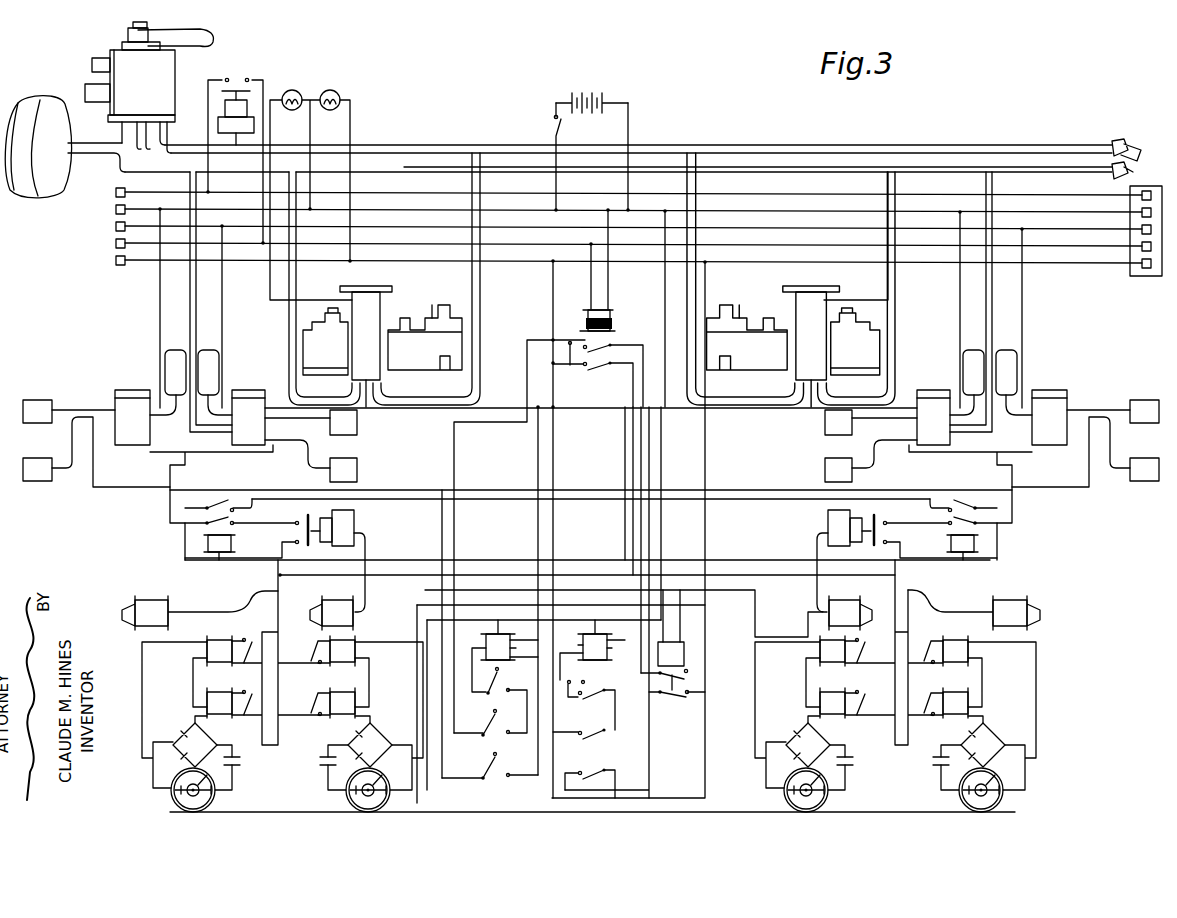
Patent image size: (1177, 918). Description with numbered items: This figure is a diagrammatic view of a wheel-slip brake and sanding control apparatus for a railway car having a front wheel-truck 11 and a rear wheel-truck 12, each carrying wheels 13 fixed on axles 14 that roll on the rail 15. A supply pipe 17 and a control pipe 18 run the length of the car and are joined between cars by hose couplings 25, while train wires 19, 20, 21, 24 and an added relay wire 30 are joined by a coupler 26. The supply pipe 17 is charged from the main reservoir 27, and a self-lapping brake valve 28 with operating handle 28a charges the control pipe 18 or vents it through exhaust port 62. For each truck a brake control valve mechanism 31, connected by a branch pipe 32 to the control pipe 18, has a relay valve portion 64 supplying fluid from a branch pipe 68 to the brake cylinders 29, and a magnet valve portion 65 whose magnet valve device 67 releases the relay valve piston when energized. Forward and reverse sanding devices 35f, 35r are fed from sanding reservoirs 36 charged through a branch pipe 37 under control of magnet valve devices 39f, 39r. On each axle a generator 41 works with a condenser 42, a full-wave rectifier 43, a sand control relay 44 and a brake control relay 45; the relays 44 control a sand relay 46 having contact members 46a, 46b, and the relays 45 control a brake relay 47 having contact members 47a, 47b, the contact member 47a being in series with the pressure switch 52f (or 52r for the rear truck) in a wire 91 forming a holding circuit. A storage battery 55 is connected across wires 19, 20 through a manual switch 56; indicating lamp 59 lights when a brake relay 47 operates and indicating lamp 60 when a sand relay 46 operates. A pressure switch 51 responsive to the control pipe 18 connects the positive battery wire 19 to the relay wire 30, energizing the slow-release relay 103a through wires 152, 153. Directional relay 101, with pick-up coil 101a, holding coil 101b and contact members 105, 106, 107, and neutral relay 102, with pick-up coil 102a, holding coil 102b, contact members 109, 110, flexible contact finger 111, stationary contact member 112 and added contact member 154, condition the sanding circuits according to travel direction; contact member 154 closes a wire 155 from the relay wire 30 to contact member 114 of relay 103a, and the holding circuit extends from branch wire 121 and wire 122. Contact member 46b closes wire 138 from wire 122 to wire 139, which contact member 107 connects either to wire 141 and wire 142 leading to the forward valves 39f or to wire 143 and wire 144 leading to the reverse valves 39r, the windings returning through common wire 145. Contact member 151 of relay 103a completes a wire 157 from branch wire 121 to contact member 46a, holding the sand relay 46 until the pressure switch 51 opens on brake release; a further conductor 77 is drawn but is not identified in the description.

The front wheel-truck 11 is at (280, 783).
The rear wheel-truck 12 is at (898, 787).
The wheel 13 is at (217, 797).
The axle 14 is at (185, 782).
The rail 15 is at (676, 811).
The supply pipe 17 is at (437, 171).
The control pipe 18 is at (449, 146).
The positive battery wire 19 is at (427, 193).
The negative battery wire 20 is at (419, 210).
The indicating wire 21 is at (409, 227).
The common sanding wire 24 is at (389, 261).
The hose couplings 25 is at (1129, 150).
The coupler 26 is at (1144, 277).
The main reservoir 27 is at (40, 100).
The brake valve 28 is at (178, 62).
The operating handle 28a is at (216, 40).
The brake cylinders 29 is at (158, 597).
The relay wire 30 is at (399, 244).
The brake control valve mechanism 31 is at (356, 288).
The branch pipe 32 is at (472, 276).
The forward sanding devices 35f is at (52, 424).
The reverse sanding devices 35r is at (346, 436).
The sanding reservoirs 36 is at (174, 350).
The branch pipe 37 is at (190, 292).
The forward sanding magnet valve device 39f is at (148, 382).
The reverse sanding magnet valve device 39r is at (262, 382).
The generator 41 is at (170, 797).
The electrical condenser 42 is at (318, 758).
The full-wave rectifier 43 is at (190, 729).
The sand control relay 44 is at (205, 650).
The brake control relay 45 is at (205, 702).
The sand relay 46 is at (688, 650).
The contact member 46a is at (690, 680).
The contact member 46b is at (663, 698).
The brake relay 47 is at (233, 539).
The contact member 47a is at (238, 519).
The contact member 47b is at (222, 505).
The pressure switch 51 is at (221, 112).
The pressure switch 52f is at (341, 512).
The pressure switch 52r is at (838, 515).
The storage battery 55 is at (589, 93).
The manually operated switch 56 is at (552, 131).
The indicating lamp 59 is at (291, 90).
The indicating lamp 60 is at (329, 90).
The exhaust port 62 is at (147, 150).
The relay valve portion 64 is at (305, 358).
The magnet valve portion 65 is at (413, 369).
The magnet valve device 67 is at (397, 300).
The branch pipe 68 is at (288, 276).
The conductor 77 is at (306, 573).
The wire 91 is at (292, 525).
The directional relay 101 is at (497, 633).
The pick-up coil 101a is at (487, 636).
The holding coil 101b is at (504, 655).
The directional relay 102 is at (614, 612).
The pick-up coil 102a is at (584, 637).
The holding coil 102b is at (601, 655).
The relay 103a is at (600, 310).
The contact member 105 is at (490, 676).
The contact member 106 is at (490, 716).
The contact member 107 is at (490, 763).
The contact member 109 is at (585, 692).
The contact member 110 is at (596, 738).
The flexible contact finger 111 is at (602, 675).
The stationary contact member 112 is at (577, 675).
The contact member 114 is at (601, 347).
The branch wire 121 is at (552, 306).
The wire 122 is at (222, 306).
The wire 138 is at (623, 541).
The wire 139 is at (707, 462).
The wire 141 is at (440, 541).
The wire 142 is at (417, 489).
The wire 143 is at (536, 541).
The wire 144 is at (535, 420).
The common wire 145 is at (158, 306).
The contact member 151 is at (588, 369).
The wire 152 is at (590, 291).
The wire 153 is at (608, 296).
The contact member 154 is at (590, 780).
The wire 155 is at (650, 300).
The wire 157 is at (631, 435).